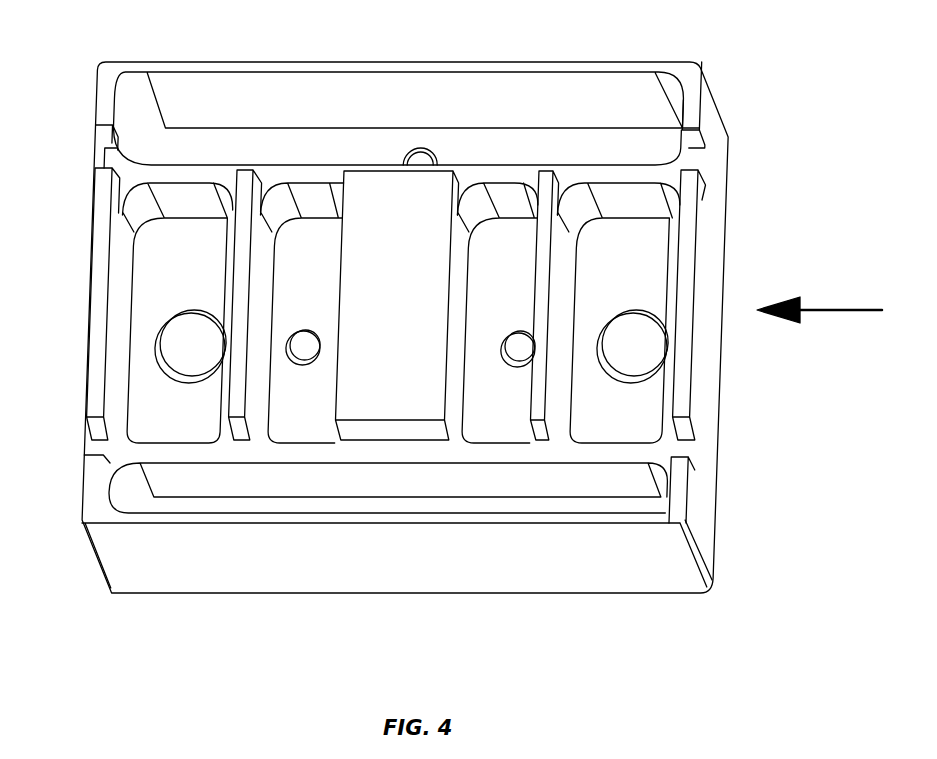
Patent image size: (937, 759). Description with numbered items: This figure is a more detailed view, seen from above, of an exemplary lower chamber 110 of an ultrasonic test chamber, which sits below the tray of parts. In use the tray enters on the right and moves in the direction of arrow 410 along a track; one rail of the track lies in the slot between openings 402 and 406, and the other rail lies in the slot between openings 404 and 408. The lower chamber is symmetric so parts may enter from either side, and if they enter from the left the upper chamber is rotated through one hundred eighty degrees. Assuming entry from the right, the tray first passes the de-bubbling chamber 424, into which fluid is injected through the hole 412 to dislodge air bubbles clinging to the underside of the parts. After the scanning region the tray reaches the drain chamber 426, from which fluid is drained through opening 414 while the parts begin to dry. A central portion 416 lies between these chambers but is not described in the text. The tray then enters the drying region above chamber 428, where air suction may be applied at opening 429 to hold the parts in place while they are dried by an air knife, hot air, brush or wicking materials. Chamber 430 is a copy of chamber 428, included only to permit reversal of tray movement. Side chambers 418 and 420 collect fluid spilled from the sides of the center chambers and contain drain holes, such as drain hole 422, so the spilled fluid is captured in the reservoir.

The lower chamber 110 is at (229, 663).
The opening 402 is at (103, 157).
The opening 404 is at (93, 447).
The opening 406 is at (700, 160).
The opening 408 is at (690, 452).
The arrow 410 is at (820, 310).
The hole 412 is at (520, 350).
The opening 414 is at (302, 348).
The central block 416 is at (390, 400).
The side chamber 418 is at (512, 505).
The side chamber 420 is at (478, 150).
The drain hole 422 is at (417, 147).
The de-bubbling chamber 424 is at (508, 265).
The drain chamber 426 is at (297, 263).
The chamber 428 is at (168, 265).
The opening 429 is at (190, 347).
The chamber 430 is at (658, 265).